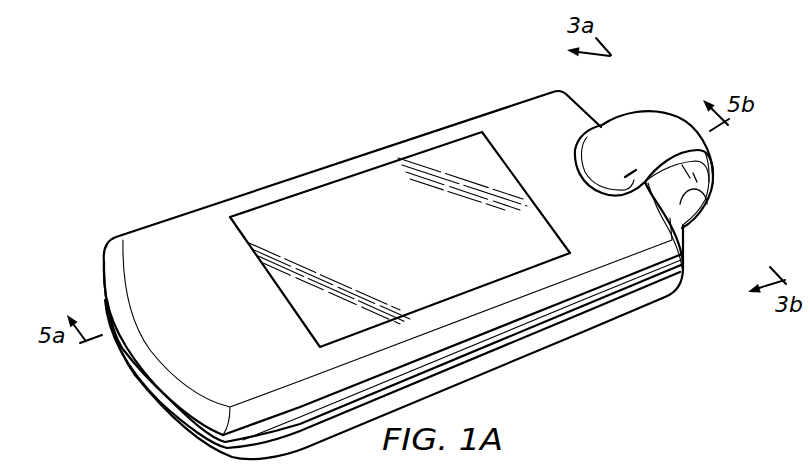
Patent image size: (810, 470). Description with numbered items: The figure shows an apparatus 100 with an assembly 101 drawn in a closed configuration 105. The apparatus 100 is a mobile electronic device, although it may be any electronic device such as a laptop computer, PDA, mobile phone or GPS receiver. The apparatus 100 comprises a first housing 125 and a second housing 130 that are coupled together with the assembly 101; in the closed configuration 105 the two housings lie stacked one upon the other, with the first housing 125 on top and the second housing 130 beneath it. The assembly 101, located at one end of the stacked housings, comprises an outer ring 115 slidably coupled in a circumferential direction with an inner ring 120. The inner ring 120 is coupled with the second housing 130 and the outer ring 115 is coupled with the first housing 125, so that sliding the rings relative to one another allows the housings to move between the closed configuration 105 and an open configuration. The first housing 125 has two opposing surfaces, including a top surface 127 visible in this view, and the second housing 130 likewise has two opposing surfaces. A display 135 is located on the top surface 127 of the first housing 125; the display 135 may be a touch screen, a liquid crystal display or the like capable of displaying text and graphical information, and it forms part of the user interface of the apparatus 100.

The apparatus 100 is at (350, 63).
The assembly 101 is at (664, 82).
The closed configuration 105 is at (266, 141).
The outer ring 115 is at (632, 123).
The inner ring 120 is at (709, 195).
The first housing 125 is at (701, 248).
The top surface 127 is at (192, 232).
The second housing 130 is at (694, 293).
The display 135 is at (338, 195).